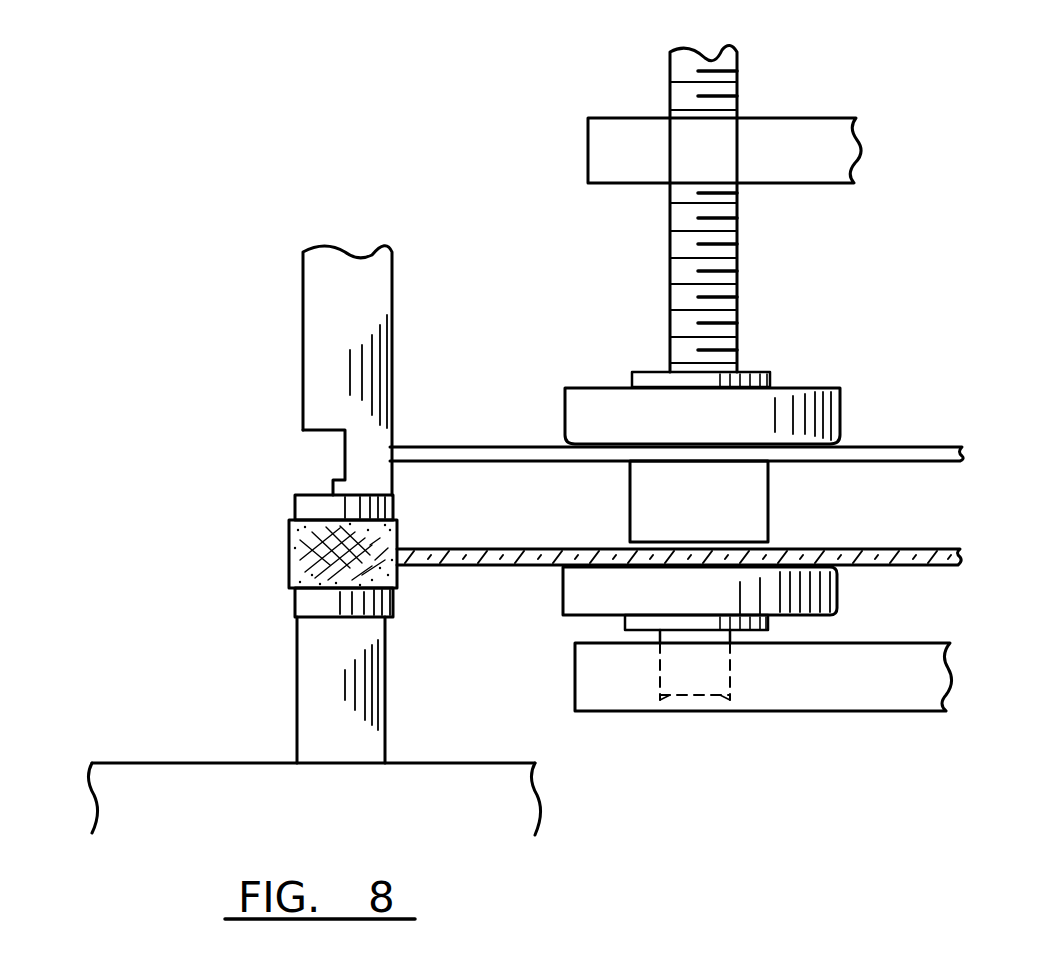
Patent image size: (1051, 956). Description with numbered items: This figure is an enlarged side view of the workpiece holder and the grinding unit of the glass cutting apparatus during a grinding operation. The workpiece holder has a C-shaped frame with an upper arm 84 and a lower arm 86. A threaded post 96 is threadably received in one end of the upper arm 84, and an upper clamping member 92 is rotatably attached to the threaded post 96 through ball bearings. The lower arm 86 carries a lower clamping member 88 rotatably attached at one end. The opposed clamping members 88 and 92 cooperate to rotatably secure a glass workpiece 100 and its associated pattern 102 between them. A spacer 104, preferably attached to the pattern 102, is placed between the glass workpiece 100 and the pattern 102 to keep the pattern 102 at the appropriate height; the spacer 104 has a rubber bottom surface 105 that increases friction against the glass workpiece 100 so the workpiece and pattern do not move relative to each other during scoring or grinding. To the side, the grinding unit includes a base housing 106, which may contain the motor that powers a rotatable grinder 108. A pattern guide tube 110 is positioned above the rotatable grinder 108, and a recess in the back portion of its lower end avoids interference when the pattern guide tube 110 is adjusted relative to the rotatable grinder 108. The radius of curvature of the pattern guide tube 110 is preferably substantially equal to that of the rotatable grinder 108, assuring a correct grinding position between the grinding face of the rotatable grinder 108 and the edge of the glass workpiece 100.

The upper arm 84 is at (835, 148).
The threaded post 96 is at (722, 283).
The upper clamping member 92 is at (822, 410).
The pattern 102 is at (928, 456).
The spacer 104 is at (722, 524).
The rubber bottom surface 105 is at (770, 541).
The glass workpiece 100 is at (938, 566).
The lower clamping member 88 is at (820, 590).
The lower arm 86 is at (905, 683).
The pattern guide tube 110 is at (372, 308).
The rotatable grinder 108 is at (372, 530).
The base housing 106 is at (418, 763).